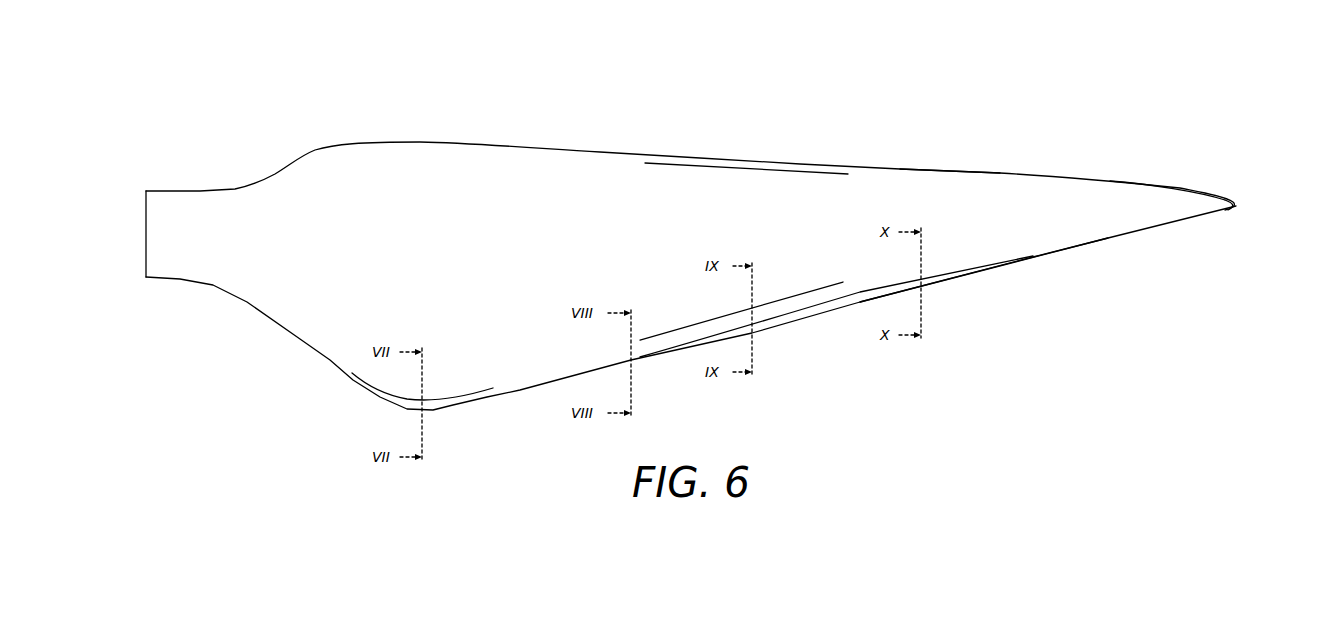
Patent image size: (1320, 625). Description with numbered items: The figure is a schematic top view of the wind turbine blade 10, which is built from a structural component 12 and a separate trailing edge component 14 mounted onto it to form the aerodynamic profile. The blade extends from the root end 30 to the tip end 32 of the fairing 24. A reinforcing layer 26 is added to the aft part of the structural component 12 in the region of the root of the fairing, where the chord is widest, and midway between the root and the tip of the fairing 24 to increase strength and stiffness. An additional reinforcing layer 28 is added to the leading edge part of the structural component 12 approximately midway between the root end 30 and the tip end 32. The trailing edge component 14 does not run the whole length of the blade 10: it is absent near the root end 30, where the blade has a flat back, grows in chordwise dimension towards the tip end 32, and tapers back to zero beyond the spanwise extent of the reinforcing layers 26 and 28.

The wind turbine blade 10 is at (309, 118).
The structural component 12 is at (965, 183).
The trailing edge component 14 is at (956, 275).
The fairing 24 is at (1185, 183).
The reinforcing layer 26 is at (463, 400).
The additional reinforcing layer 28 is at (764, 161).
The root end 30 is at (146, 236).
The tip end 32 is at (1236, 206).